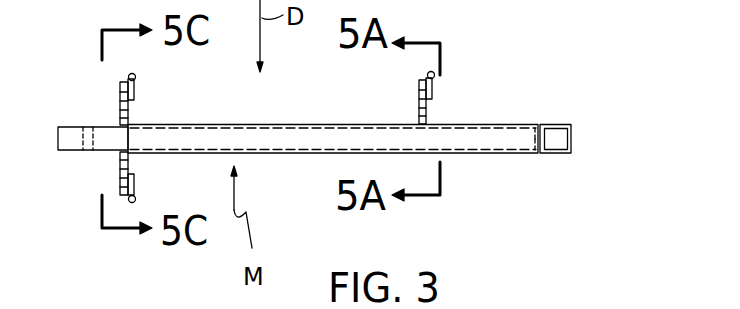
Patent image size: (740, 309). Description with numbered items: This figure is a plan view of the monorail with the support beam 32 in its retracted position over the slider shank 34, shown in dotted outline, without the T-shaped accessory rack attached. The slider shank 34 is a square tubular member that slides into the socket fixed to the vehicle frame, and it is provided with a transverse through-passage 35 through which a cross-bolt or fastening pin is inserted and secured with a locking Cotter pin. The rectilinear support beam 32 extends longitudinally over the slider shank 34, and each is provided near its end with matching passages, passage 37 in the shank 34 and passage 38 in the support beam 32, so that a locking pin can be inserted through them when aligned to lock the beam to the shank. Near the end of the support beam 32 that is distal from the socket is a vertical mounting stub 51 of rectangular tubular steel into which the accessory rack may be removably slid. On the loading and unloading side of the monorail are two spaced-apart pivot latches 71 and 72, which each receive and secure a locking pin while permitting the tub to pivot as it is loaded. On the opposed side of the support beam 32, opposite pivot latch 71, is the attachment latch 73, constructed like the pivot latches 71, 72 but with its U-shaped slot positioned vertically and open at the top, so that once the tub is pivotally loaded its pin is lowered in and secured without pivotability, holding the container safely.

The support beam 32 is at (266, 153).
The slider shank 34 is at (70, 151).
The through-passage 35 is at (95, 123).
The passage 37 is at (517, 144).
The passage 38 is at (523, 118).
The vertical mounting stub 51 is at (571, 123).
The pivot latch 71 is at (418, 96).
The pivot latch 72 is at (121, 96).
The attachment latch 73 is at (134, 187).